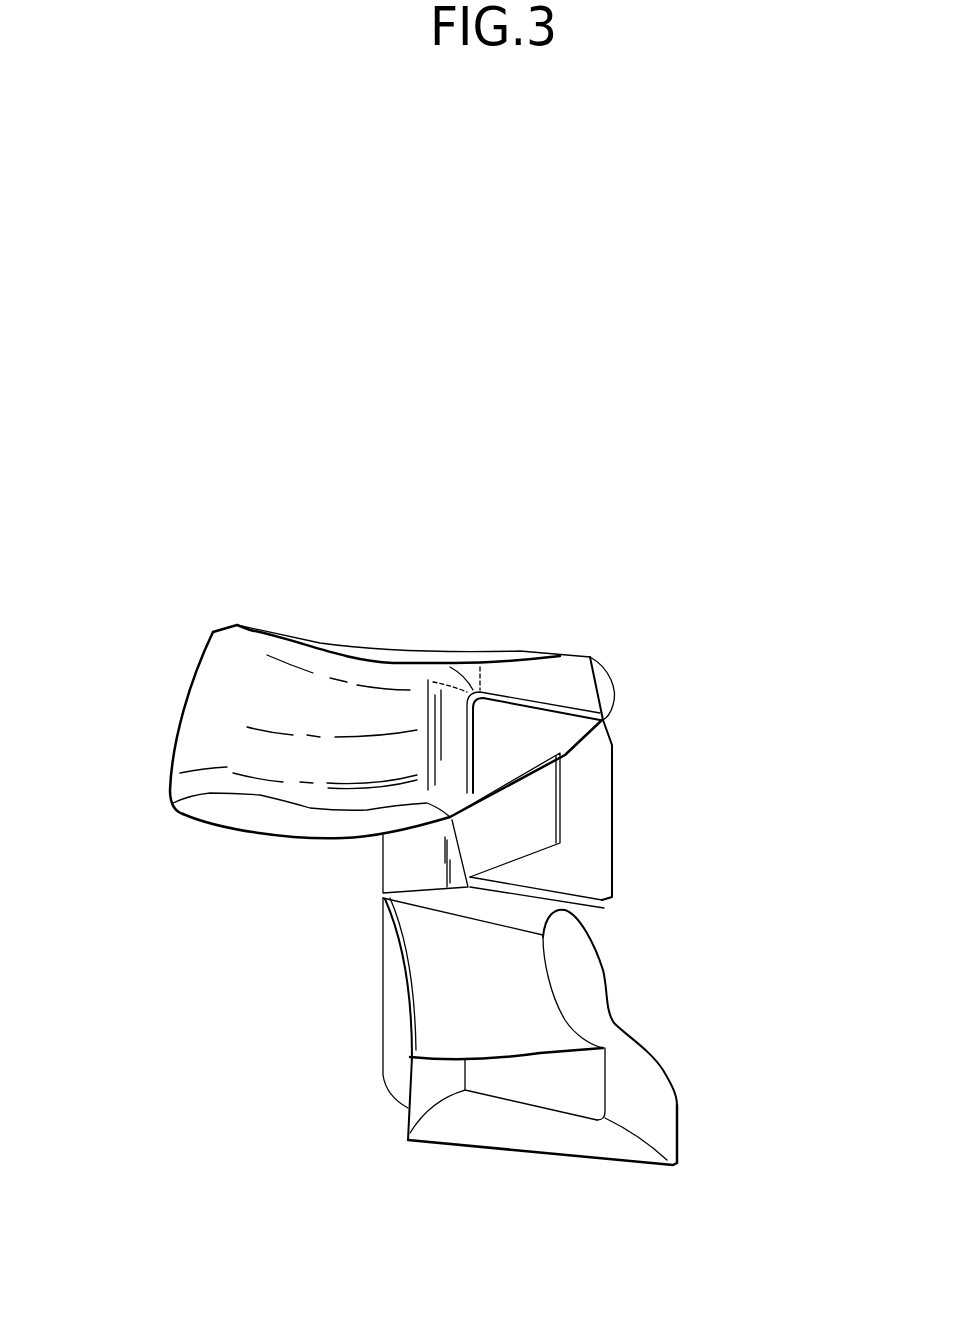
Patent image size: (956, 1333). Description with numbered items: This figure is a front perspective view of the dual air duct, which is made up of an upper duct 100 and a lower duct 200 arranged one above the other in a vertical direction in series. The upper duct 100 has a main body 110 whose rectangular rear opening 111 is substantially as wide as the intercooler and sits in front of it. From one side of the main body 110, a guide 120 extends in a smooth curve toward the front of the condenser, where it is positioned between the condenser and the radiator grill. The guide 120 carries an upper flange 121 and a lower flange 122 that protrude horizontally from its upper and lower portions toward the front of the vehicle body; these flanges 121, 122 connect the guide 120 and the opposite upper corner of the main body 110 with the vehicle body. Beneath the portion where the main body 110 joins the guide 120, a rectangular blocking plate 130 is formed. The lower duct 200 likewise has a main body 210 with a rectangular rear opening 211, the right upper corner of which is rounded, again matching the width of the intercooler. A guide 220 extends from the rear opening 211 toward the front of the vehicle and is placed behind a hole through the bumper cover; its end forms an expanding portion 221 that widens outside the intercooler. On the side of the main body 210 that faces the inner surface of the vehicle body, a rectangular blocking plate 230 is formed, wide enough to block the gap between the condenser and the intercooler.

The upper duct 100 is at (596, 652).
The main body 110 is at (612, 777).
The rectangular rear opening 111 is at (513, 737).
The guide 120 is at (260, 713).
The upper flange 121 is at (365, 647).
The lower flange 122 is at (277, 817).
The blocking plate 130 is at (400, 862).
The lower duct 200 is at (647, 1031).
The main body 210 is at (573, 960).
The rectangular rear opening 211 is at (560, 1078).
The guide 220 is at (572, 1040).
The expanding portion 221 is at (660, 1125).
The rectangular blocking plate 230 is at (393, 1045).